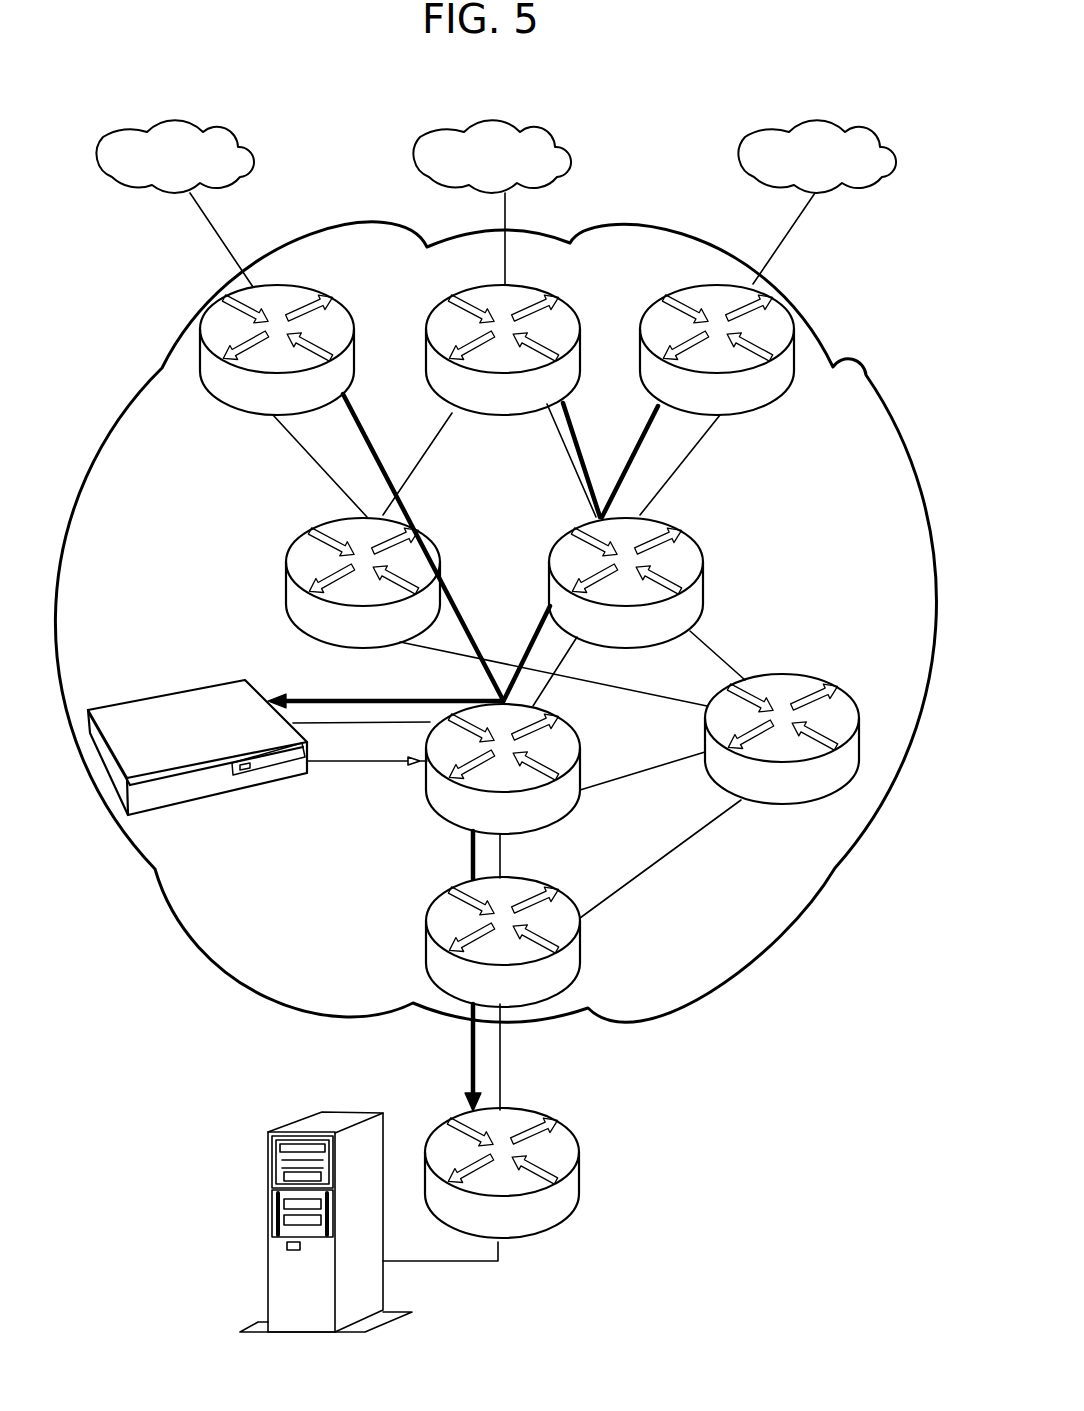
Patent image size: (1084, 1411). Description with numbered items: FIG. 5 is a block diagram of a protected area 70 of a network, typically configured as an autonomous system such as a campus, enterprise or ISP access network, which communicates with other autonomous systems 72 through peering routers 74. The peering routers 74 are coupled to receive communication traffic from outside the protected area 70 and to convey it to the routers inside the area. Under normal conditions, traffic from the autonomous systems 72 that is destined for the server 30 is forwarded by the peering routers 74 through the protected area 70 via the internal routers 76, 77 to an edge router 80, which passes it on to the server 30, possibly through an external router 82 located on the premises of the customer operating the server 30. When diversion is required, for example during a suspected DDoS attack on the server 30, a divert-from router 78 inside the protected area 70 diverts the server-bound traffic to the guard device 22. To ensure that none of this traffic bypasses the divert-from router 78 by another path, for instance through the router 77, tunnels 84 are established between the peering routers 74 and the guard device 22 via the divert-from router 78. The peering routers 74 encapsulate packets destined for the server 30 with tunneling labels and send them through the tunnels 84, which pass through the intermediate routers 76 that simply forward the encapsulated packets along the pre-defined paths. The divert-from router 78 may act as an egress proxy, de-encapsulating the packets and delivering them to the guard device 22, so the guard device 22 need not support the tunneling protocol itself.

The guard device 22 is at (164, 706).
The server 30 is at (267, 1206).
The protected area 70 is at (857, 360).
The autonomous systems 72 is at (233, 133).
The peering routers 74 is at (348, 307).
The internal routers 76 is at (286, 586).
The router 77 is at (852, 696).
The divert-from router 78 is at (568, 728).
The edge router 80 is at (572, 898).
The external router 82 is at (572, 1130).
The tunnels 84 is at (628, 443).